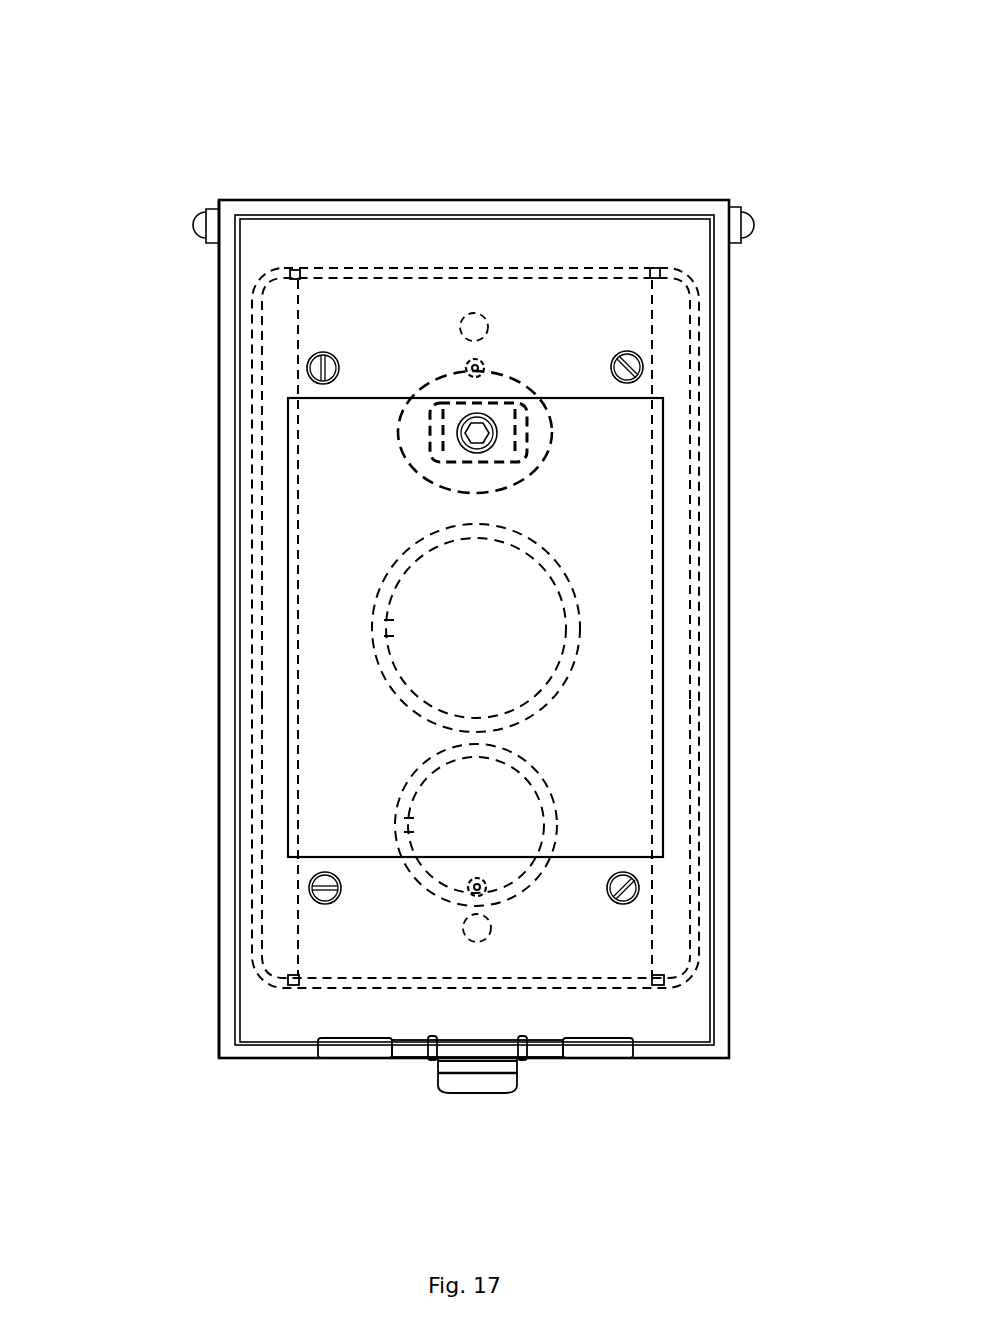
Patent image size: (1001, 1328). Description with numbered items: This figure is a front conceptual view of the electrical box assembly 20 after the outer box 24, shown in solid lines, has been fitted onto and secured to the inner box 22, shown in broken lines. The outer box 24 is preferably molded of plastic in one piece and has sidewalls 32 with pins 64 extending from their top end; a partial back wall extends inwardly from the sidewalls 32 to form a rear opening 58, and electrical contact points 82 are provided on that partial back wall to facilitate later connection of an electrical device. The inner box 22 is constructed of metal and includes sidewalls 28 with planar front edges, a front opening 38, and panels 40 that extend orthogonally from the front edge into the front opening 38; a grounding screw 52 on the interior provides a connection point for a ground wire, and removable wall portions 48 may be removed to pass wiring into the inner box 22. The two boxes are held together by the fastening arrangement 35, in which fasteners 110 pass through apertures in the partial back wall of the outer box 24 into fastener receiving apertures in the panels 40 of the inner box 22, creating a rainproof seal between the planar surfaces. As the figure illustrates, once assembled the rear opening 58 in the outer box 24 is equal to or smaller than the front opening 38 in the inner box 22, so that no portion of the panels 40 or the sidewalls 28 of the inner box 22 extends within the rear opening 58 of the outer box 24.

The enclosure assembly 20 is at (146, 162).
The inner box 22 is at (607, 268).
The outer box 24 is at (470, 207).
The sidewalls 28 is at (695, 748).
The sidewalls 32 is at (226, 467).
The fastening arrangement 35 is at (650, 371).
The front opening 38 is at (693, 562).
The panels 40 is at (393, 339).
The removable wall portions 48 is at (485, 643).
The grounding screw 52 is at (486, 437).
The rear opening 58 is at (663, 628).
The pins 64 is at (754, 223).
The electrical contact points 82 is at (486, 320).
The fasteners 110 is at (640, 362).